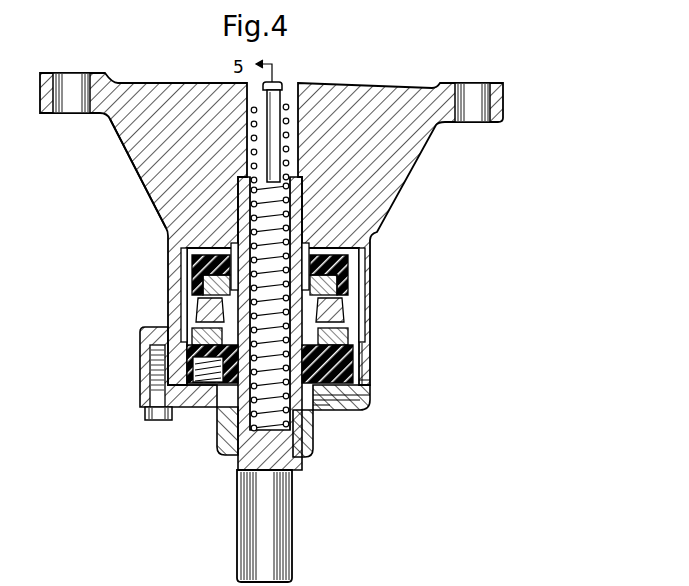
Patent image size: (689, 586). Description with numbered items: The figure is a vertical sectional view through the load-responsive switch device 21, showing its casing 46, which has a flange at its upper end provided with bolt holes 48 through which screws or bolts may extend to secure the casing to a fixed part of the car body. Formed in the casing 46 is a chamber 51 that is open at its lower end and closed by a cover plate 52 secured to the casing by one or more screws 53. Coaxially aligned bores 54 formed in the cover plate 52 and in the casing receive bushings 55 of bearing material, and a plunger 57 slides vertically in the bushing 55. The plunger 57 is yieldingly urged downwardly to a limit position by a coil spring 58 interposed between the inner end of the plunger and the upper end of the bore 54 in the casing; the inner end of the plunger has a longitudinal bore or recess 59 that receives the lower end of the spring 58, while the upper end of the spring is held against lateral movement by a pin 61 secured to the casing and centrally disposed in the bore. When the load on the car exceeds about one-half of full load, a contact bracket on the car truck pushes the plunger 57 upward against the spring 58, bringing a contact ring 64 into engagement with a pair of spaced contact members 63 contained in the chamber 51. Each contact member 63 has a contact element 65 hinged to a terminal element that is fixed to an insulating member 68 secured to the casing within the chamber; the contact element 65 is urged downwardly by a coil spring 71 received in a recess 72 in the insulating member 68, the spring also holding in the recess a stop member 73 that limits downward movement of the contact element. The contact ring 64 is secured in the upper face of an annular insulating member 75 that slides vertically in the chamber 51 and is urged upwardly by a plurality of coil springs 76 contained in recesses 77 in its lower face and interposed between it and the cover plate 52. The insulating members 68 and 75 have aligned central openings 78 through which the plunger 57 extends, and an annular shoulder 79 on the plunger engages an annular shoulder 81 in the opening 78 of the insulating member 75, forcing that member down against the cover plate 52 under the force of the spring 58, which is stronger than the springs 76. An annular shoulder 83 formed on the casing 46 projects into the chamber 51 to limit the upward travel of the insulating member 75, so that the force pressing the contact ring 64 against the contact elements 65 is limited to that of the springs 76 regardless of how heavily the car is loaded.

The load-responsive switch device 21 is at (349, 86).
The casing 46 is at (143, 159).
The bolt holes 48 is at (67, 113).
The chamber 51 is at (160, 357).
The cover plate 52 is at (364, 412).
The screws 53 is at (147, 416).
The bores 54 is at (303, 181).
The bushings 55 is at (240, 180).
The plunger 57 is at (274, 511).
The coil spring 58 is at (298, 115).
The longitudinal bore or recess 59 is at (292, 209).
The pin 61 is at (276, 100).
The contact members 63 is at (192, 333).
The contact ring 64 is at (365, 362).
The contact element 65 is at (197, 316).
The insulating member 68 is at (360, 258).
The coil spring 71 is at (192, 296).
The recess 72 is at (200, 277).
The stop member 73 is at (195, 268).
The annular insulating member 75 is at (352, 398).
The coil springs 76 is at (213, 388).
The recesses 77 is at (196, 390).
The central openings 78 is at (330, 311).
The annular shoulder 79 is at (338, 400).
The annular shoulder 81 is at (320, 412).
The annular shoulder 83 is at (367, 386).